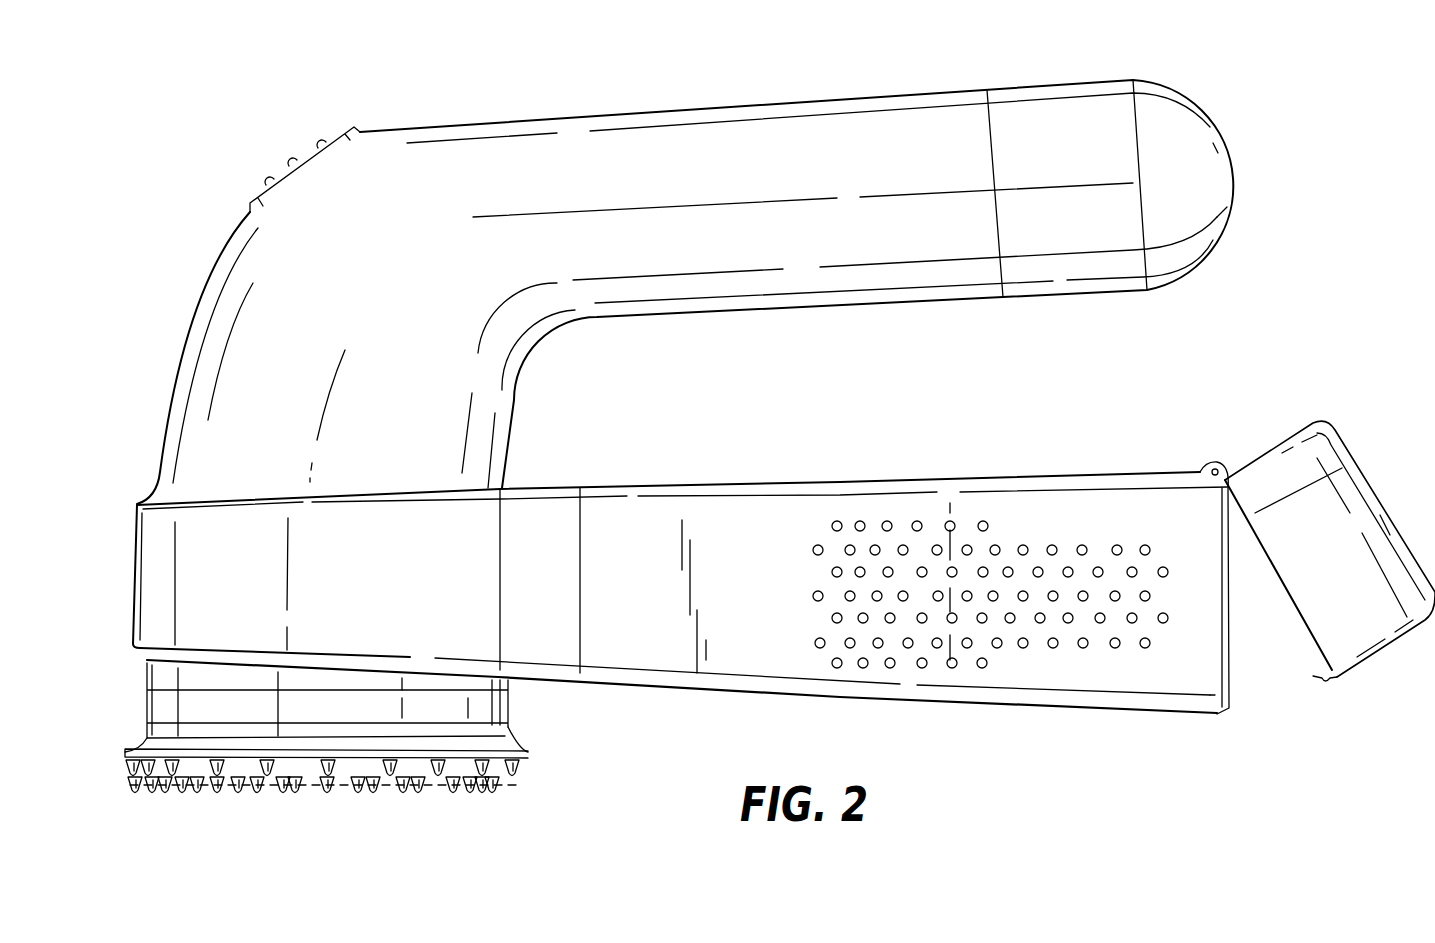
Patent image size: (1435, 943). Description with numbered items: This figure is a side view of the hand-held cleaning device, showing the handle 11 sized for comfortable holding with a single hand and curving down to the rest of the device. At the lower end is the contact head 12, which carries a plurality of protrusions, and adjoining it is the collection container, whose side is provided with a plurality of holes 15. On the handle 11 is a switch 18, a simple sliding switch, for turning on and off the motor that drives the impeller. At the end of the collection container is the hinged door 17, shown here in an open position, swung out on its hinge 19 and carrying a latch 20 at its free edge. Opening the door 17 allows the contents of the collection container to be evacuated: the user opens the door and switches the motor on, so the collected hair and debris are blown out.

The handle 11 is at (757, 153).
The switch 18 is at (307, 158).
The contact head 12 is at (500, 780).
The holes 15 is at (948, 525).
The hinge 19 is at (1203, 463).
The hinged door 17 is at (1348, 500).
The latch 20 is at (1323, 677).